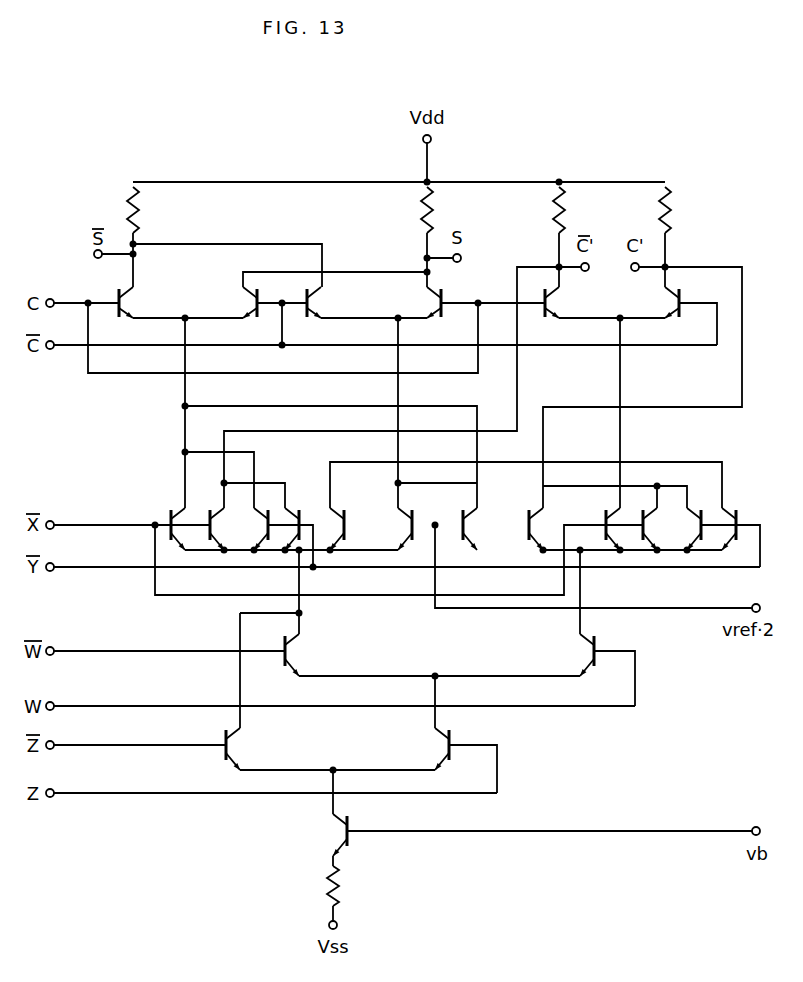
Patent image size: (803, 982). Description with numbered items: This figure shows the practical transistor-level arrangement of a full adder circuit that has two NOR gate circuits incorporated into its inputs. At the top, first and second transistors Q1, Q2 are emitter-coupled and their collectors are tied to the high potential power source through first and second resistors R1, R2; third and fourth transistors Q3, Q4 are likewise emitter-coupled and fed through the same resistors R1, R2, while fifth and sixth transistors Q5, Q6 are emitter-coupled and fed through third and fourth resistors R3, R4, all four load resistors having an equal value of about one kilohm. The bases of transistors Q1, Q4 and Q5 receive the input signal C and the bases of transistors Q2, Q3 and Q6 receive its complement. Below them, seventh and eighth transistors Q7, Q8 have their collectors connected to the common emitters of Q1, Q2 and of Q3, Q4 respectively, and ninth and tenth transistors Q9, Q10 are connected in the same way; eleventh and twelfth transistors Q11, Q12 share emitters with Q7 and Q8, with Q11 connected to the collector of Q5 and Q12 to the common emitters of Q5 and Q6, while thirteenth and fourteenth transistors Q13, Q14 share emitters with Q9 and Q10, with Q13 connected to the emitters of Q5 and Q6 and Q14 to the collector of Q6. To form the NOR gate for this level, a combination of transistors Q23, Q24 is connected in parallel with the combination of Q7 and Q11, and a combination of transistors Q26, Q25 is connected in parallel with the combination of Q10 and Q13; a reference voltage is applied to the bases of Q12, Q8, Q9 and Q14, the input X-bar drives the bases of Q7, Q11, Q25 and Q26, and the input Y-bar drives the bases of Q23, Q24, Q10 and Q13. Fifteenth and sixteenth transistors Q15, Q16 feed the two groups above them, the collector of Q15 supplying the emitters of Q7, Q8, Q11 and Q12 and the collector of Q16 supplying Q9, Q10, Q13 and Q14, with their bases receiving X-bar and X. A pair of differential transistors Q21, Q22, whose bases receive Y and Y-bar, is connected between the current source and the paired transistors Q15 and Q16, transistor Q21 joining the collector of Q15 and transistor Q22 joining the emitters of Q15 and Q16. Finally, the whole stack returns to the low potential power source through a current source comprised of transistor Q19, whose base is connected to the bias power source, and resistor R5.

The first resistor R1 is at (140, 214).
The second resistor R2 is at (419, 212).
The third resistor R3 is at (551, 212).
The fourth resistor R4 is at (657, 212).
The resistor R5 is at (318, 901).
The first transistor Q1 is at (126, 302).
The second transistor Q2 is at (248, 302).
The third transistor Q3 is at (314, 302).
The fourth transistor Q4 is at (432, 302).
The fifth transistor Q5 is at (552, 302).
The sixth transistor Q6 is at (670, 302).
The seventh transistor Q7 is at (168, 506).
The eighth transistor Q8 is at (408, 508).
The ninth transistor Q9 is at (478, 508).
The tenth transistor Q10 is at (693, 510).
The eleventh transistor Q11 is at (208, 508).
The twelfth transistor Q12 is at (340, 510).
The thirteenth transistor Q13 is at (740, 520).
The fourteenth transistor Q14 is at (543, 510).
The fifteenth transistor Q15 is at (292, 646).
The sixteenth transistor Q16 is at (585, 652).
The transistor Q19 is at (340, 830).
The differential transistor Q21 is at (233, 744).
The differential transistor Q22 is at (440, 744).
The transistor Q23 is at (260, 504).
The transistor Q24 is at (294, 510).
The transistor Q25 is at (613, 544).
The transistor Q26 is at (660, 544).